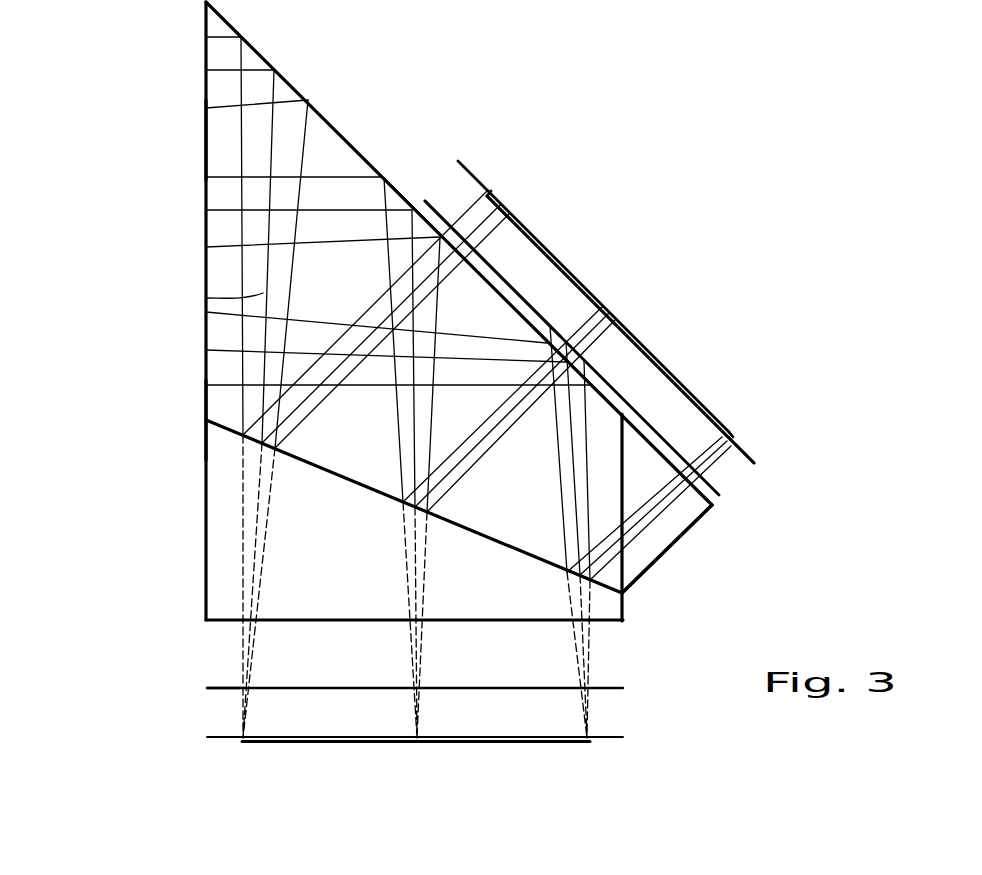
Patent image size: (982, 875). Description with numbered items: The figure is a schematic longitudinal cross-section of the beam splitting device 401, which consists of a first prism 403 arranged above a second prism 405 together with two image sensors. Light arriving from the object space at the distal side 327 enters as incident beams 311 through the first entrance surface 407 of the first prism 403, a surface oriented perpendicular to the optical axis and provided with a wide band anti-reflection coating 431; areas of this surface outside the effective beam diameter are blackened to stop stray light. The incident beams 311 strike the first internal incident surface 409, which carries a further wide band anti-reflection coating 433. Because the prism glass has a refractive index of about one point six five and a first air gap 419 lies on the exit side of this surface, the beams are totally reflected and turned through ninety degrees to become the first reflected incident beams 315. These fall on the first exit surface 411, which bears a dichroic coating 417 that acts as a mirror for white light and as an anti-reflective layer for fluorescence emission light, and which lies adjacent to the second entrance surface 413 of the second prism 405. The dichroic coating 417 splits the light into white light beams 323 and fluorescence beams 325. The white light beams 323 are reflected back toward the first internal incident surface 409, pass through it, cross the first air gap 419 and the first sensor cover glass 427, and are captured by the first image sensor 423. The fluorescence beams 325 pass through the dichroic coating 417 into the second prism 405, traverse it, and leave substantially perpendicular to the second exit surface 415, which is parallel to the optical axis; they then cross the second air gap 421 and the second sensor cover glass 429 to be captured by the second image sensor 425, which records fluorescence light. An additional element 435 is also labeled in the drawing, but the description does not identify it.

The beam splitting device 401 is at (437, 78).
The first prism 403 is at (668, 525).
The second prism 405 is at (612, 600).
The first entrance surface 407 is at (206, 124).
The first internal incident surface 409 is at (330, 132).
The first exit surface 411 is at (232, 428).
The second entrance surface 413 is at (235, 430).
The second exit surface 415 is at (222, 622).
The dichroic coating 417 is at (487, 540).
The first air gap 419 is at (655, 440).
The second air gap 421 is at (227, 655).
The first image sensor 423 is at (653, 351).
The second image sensor 425 is at (537, 743).
The first sensor cover glass 427 is at (663, 406).
The second sensor cover glass 429 is at (598, 717).
The wide band anti-reflection coating 431 is at (206, 142).
The wide band anti-reflection coating 433 is at (497, 280).
The polarizer 435 is at (227, 688).
The incident beams 311 is at (222, 252).
The first reflected incident beams 315 is at (268, 303).
The white light beams 323 is at (398, 300).
The fluorescence beams 325 is at (257, 550).
The distal side 327 is at (415, 308).